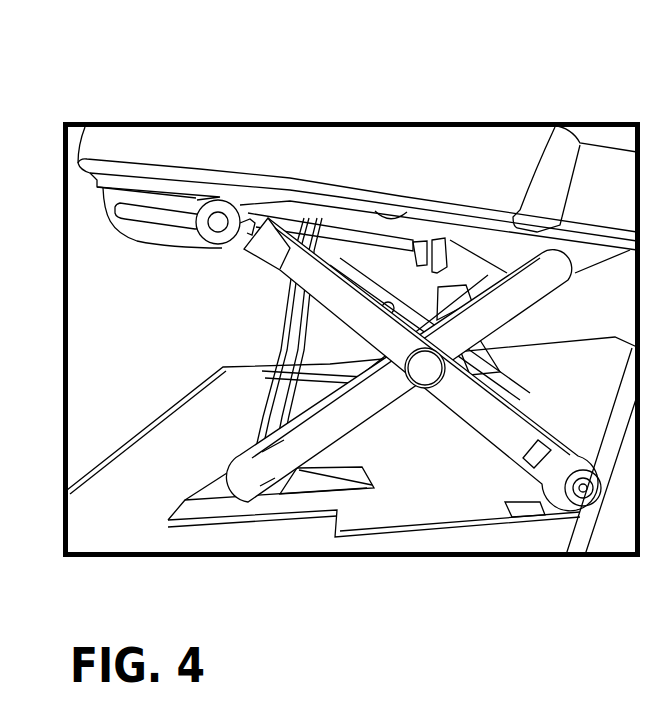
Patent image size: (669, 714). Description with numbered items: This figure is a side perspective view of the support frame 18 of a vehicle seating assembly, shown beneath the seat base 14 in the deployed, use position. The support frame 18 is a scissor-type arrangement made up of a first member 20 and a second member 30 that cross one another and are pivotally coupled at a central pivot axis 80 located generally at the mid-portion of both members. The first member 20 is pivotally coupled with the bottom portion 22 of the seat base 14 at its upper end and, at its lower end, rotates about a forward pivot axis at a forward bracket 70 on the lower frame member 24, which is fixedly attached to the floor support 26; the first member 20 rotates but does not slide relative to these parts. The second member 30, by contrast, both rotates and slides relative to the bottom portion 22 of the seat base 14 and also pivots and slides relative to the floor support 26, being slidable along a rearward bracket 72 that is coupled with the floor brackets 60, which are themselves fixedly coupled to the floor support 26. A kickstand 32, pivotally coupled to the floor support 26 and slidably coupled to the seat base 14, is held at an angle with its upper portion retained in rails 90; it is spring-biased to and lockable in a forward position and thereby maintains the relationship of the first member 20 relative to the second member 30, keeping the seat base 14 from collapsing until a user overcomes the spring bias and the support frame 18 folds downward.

The seat base 14 is at (250, 153).
The bottom portion 22 is at (407, 217).
The rails 90 is at (432, 232).
The second member 30 is at (293, 273).
The support frame 18 is at (275, 318).
The kickstand 32 is at (277, 383).
The forward bracket 70 is at (219, 487).
The first member 20 is at (278, 463).
The floor support 26 is at (378, 540).
The lower frame member 24 is at (410, 485).
The central pivot axis 80 is at (432, 378).
The rearward bracket 72 is at (560, 500).
The floor bracket 60 is at (622, 520).